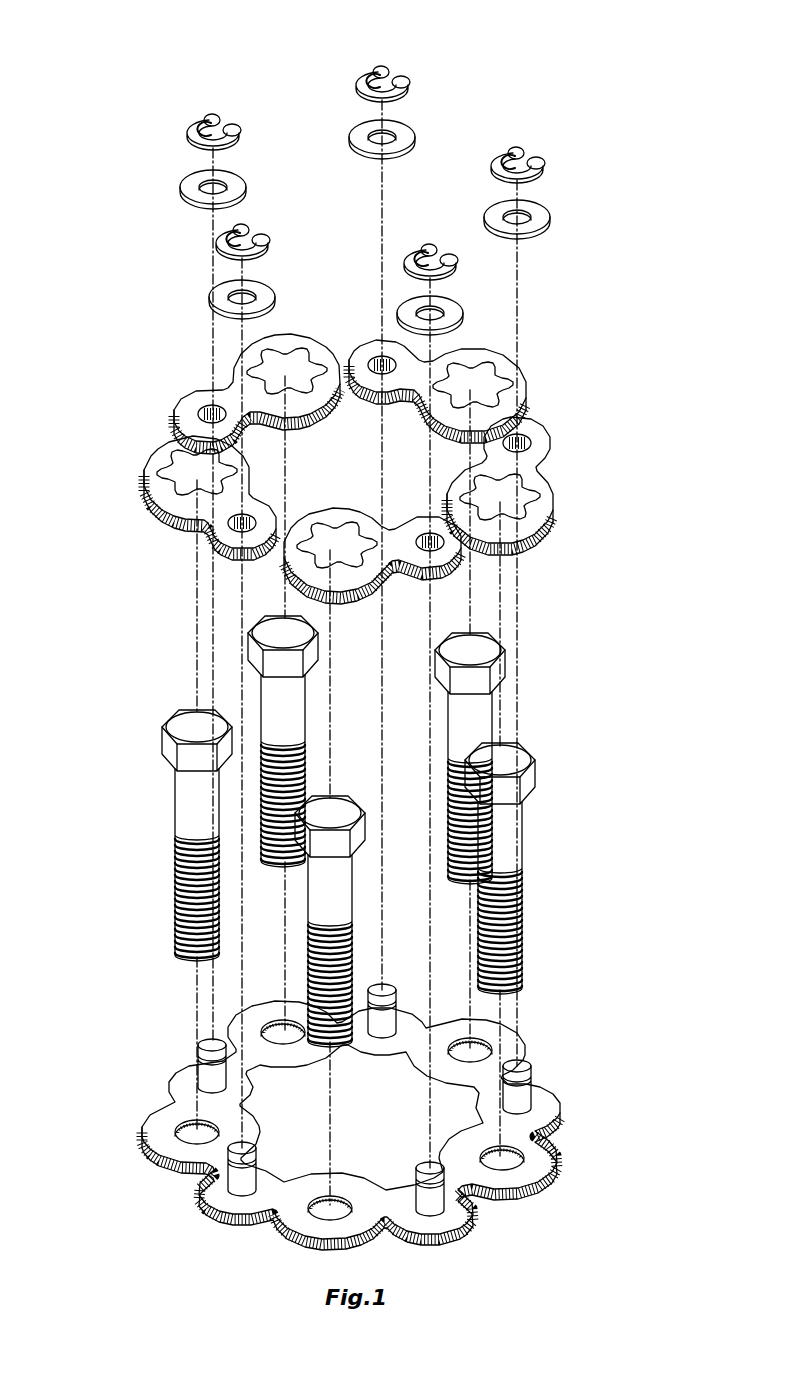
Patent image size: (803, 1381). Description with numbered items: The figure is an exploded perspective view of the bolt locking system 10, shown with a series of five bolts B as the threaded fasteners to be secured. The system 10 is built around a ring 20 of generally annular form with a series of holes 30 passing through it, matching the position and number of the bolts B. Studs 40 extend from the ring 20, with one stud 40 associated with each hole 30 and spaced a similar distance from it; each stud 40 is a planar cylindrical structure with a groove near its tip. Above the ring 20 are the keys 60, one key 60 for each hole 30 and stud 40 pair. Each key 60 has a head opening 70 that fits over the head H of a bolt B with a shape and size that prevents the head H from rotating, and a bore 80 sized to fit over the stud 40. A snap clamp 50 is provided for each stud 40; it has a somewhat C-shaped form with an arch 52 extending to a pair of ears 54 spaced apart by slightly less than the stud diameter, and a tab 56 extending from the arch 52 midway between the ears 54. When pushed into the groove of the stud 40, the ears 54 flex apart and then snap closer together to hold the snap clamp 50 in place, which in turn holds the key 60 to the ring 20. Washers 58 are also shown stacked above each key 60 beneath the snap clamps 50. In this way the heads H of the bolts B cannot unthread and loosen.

The bolt locking system 10 is at (622, 580).
The ring 20 is at (351, 1106).
The hole 30 is at (280, 1028).
The stud 40 is at (205, 1072).
The snap clamp 50 is at (361, 145).
The arch 52 is at (195, 131).
The ears 54 is at (205, 118).
The tab 56 is at (193, 141).
The washer 58 is at (232, 183).
The key 60 is at (346, 448).
The head opening 70 is at (283, 378).
The bore 80 is at (210, 412).
The head H is at (185, 727).
The bolt B is at (346, 824).